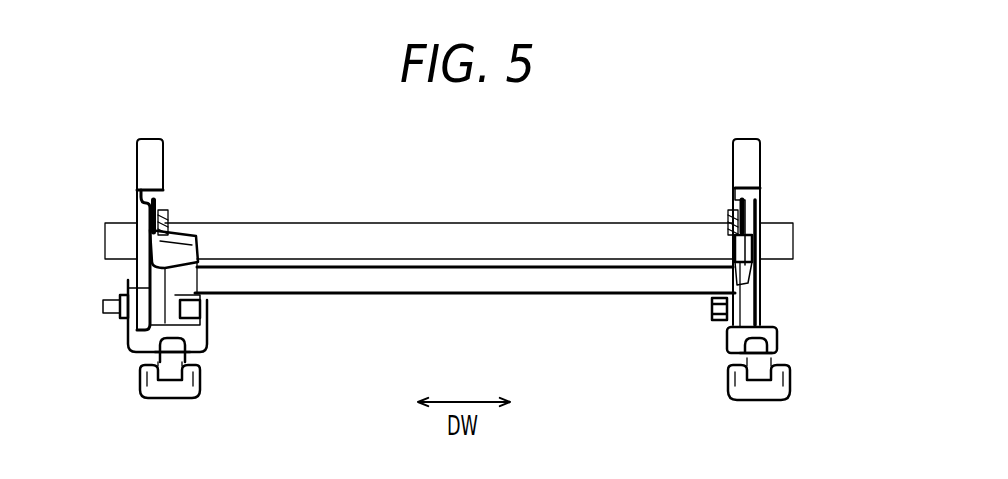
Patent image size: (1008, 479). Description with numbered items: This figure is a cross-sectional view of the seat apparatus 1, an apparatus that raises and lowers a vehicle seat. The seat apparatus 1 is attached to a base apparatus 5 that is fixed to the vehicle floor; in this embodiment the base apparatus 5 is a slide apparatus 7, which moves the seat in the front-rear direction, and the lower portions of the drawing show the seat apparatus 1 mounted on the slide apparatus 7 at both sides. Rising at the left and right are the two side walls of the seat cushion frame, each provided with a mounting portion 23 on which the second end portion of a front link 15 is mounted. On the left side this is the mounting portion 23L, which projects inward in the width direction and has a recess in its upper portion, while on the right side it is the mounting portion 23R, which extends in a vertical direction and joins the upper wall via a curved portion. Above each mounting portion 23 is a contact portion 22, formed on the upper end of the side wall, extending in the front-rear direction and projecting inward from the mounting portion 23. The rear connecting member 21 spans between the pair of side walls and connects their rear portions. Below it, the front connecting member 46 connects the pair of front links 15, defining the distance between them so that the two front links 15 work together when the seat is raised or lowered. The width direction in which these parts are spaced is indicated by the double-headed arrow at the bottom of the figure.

The seat apparatus 1 is at (484, 259).
The base apparatus 5 is at (502, 360).
The slide apparatus 7 is at (799, 348).
The front link 15 is at (187, 233).
The rear connecting member 21 is at (478, 223).
The contact portion 22 is at (152, 188).
The mounting portion 23 is at (448, 198).
The left mounting portion 23L is at (167, 225).
The right mounting portion 23R is at (732, 233).
The front connecting member 46 is at (437, 295).